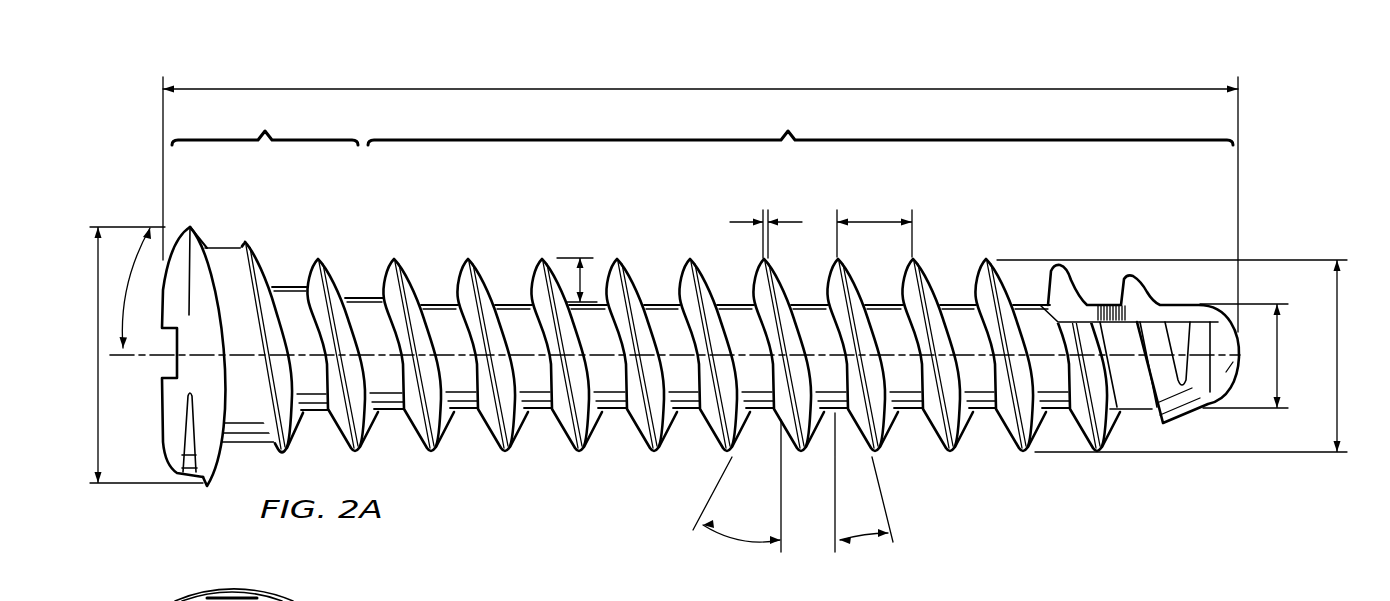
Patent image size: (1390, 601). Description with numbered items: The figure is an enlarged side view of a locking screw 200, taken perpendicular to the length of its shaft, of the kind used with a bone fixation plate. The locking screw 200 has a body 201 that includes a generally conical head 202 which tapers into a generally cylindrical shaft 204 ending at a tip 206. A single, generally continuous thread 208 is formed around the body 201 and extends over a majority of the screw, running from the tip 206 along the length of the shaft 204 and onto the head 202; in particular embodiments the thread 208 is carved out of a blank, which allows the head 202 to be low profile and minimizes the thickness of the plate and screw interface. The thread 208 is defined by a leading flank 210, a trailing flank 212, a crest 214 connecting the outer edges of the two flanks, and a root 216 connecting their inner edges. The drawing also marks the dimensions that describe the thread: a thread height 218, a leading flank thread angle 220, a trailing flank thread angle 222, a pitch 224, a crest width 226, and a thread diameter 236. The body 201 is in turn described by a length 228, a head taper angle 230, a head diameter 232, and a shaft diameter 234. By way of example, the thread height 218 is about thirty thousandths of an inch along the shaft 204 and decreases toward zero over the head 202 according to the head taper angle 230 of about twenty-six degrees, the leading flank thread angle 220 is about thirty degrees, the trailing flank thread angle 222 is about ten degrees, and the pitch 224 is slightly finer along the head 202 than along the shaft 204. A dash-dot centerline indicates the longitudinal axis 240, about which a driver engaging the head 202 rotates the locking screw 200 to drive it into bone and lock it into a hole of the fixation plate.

The locking screw 200 is at (686, 316).
The body 201 is at (527, 337).
The head 202 is at (236, 293).
The shaft 204 is at (752, 316).
The tip 206 is at (1240, 357).
The thread 208 is at (503, 425).
The leading flank 210 is at (593, 440).
The trailing flank 212 is at (567, 423).
The crest 214 is at (590, 440).
The root 216 is at (618, 423).
The thread height 218 is at (584, 280).
The leading flank thread angle 220 is at (738, 538).
The trailing flank thread angle 222 is at (862, 540).
The pitch 224 is at (873, 222).
The crest width 226 is at (766, 210).
The length 228 is at (705, 88).
The head taper angle 230 is at (240, 268).
The head diameter 232 is at (97, 302).
The shaft diameter 234 is at (1280, 360).
The thread diameter 236 is at (1340, 360).
The longitudinal axis 240 is at (142, 360).